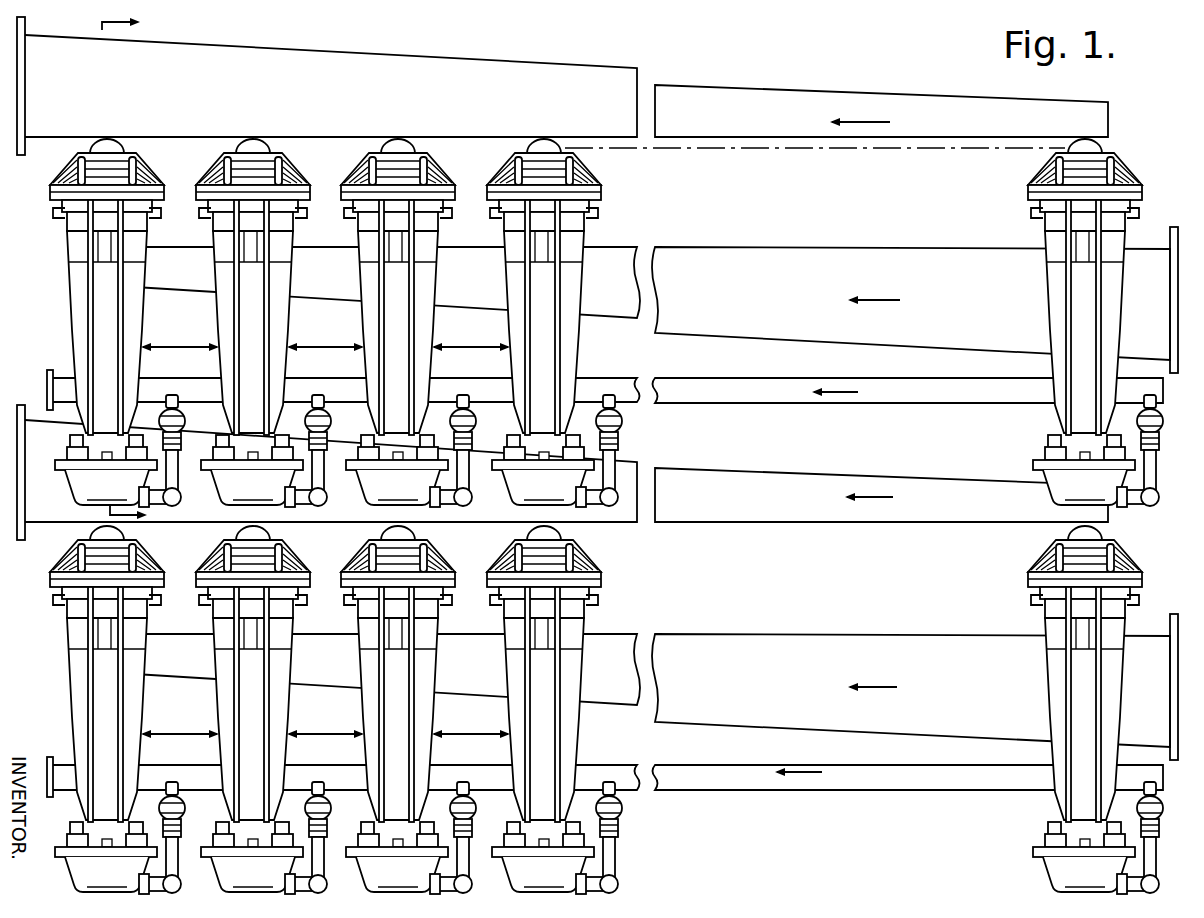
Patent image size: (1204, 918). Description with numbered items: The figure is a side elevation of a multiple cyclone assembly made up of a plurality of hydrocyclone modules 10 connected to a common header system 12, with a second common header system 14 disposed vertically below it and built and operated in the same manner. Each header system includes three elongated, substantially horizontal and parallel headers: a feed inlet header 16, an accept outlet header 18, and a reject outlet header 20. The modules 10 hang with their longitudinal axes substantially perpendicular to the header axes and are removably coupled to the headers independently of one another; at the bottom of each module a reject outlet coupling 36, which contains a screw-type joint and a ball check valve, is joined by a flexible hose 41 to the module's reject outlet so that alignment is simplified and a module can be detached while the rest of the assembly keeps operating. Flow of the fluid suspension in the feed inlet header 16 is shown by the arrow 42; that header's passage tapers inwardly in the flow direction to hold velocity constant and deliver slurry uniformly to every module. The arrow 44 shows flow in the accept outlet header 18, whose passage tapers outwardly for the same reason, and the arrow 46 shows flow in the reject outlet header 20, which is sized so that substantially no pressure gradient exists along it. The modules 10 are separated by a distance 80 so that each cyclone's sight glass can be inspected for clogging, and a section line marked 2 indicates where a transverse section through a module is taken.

The section line 2- 2 is at (136, 270).
The hydrocyclone module 10 is at (194, 184).
The common header system 12 is at (1170, 144).
The second common header system 14 is at (1153, 586).
The feed inlet header 16 is at (862, 252).
The accept outlet header 18 is at (768, 104).
The reject outlet header 20 is at (748, 380).
The reject outlet coupling 36 is at (182, 437).
The flexible hose 41 is at (178, 872).
The arrow indicating flow direction in feed inlet header 42 is at (893, 306).
The arrow indicating flow direction in accept outlet header 44 is at (870, 120).
The arrow indicating flow direction in reject outlet header 46 is at (851, 396).
The spacing distance between modules 80 is at (180, 346).